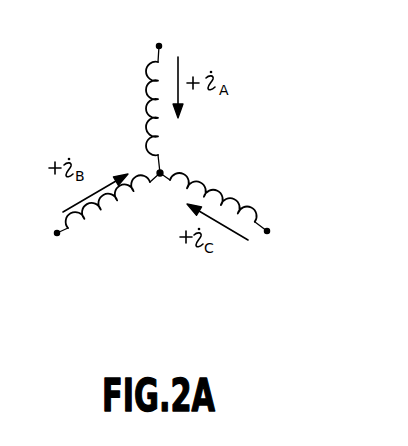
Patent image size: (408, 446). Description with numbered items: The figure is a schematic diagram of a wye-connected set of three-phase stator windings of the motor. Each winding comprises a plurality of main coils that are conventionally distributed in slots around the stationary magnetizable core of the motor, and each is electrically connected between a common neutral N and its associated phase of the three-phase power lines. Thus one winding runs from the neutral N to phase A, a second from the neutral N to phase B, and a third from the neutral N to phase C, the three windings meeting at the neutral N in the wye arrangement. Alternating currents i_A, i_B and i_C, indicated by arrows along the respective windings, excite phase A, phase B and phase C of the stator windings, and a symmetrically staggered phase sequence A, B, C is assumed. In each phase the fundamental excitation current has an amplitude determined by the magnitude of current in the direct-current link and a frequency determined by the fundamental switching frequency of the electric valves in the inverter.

The phase A is at (155, 93).
The phase B is at (94, 215).
The phase C is at (226, 211).
The neutral N is at (163, 171).